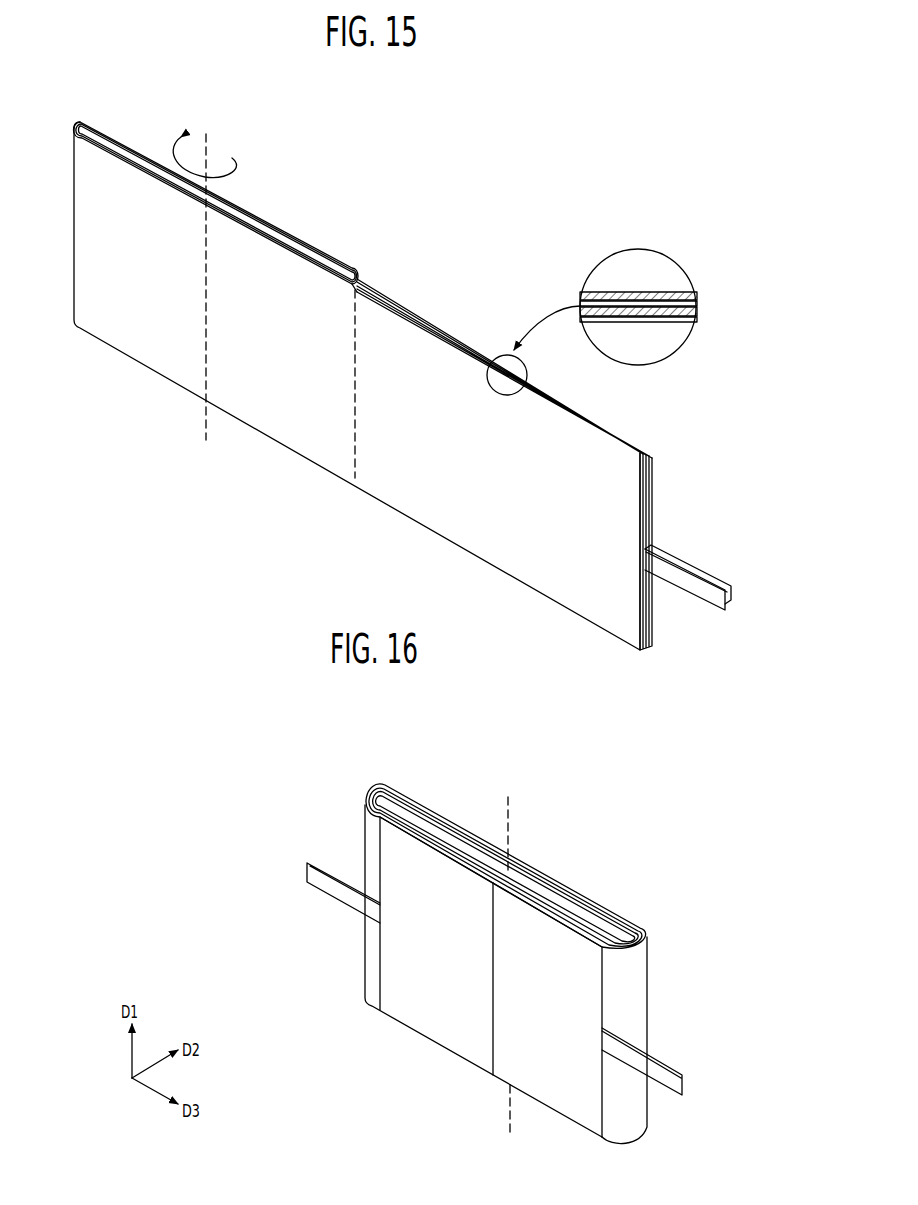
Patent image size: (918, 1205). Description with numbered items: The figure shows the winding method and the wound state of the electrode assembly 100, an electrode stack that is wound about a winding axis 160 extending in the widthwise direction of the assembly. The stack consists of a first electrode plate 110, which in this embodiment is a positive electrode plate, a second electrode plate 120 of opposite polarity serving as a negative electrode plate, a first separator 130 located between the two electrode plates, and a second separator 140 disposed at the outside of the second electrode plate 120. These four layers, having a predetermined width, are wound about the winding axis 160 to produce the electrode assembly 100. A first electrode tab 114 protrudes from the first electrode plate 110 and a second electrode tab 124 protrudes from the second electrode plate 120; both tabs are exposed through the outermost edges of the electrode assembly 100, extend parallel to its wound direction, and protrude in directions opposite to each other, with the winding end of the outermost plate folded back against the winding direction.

In FIG. 15, the electrode assembly 100 is at (474, 188).
In FIG. 16, the electrode assembly 100 is at (316, 782).
In FIG. 15, the first electrode plate 110 is at (697, 296).
In FIG. 15, the first electrode tab 114 is at (733, 600).
In FIG. 16, the first electrode tab 114 is at (676, 1085).
In FIG. 15, the second electrode plate 120 is at (697, 312).
In FIG. 16, the second electrode plate 120 is at (419, 1018).
In FIG. 15, the second electrode tab 124 is at (703, 594).
In FIG. 16, the second electrode tab 124 is at (328, 882).
In FIG. 15, the first separator 130 is at (697, 304).
In FIG. 16, the first separator 130 is at (548, 1092).
In FIG. 15, the second separator 140 is at (697, 320).
In FIG. 16, the second separator 140 is at (637, 986).
In FIG. 15, the winding axis 160 is at (207, 133).
In FIG. 16, the winding axis 160 is at (508, 797).